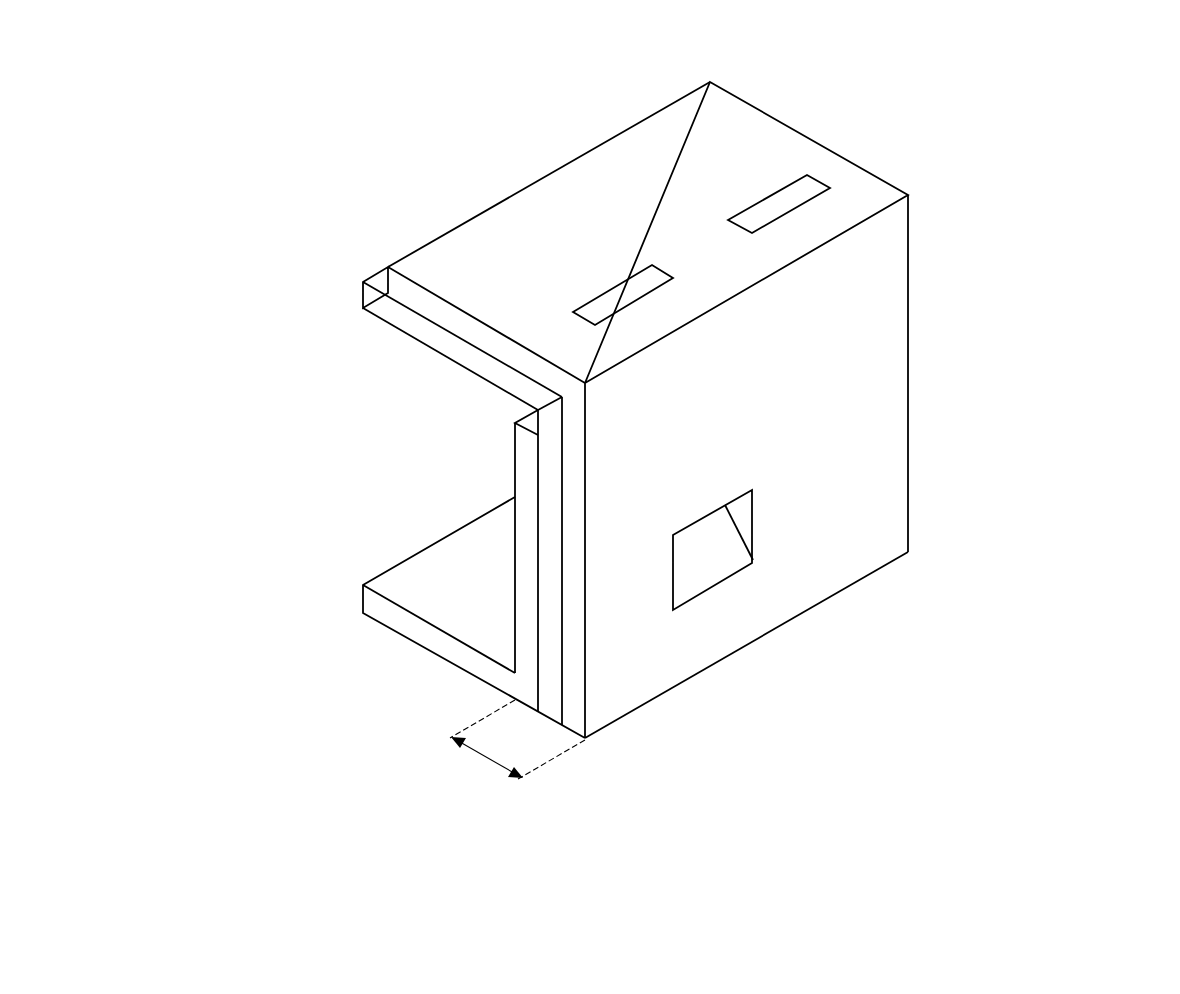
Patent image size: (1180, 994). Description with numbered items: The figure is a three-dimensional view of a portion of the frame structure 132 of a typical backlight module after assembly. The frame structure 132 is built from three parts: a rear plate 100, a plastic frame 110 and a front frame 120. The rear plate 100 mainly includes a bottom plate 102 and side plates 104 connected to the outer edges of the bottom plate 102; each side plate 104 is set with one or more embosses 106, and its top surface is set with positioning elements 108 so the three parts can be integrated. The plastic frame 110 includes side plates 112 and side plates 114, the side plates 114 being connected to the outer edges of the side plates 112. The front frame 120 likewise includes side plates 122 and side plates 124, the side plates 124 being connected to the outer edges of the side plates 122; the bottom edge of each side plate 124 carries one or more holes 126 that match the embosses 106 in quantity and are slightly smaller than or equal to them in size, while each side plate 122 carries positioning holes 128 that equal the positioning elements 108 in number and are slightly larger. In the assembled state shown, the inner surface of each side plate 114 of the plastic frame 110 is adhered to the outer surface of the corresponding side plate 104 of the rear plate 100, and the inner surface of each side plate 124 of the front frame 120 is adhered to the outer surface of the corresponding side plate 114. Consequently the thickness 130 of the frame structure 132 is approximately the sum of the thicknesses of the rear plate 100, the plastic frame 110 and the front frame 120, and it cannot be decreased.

The rear plate 100 is at (260, 647).
The bottom plate 102 is at (398, 618).
The side plate 104 is at (523, 600).
The emboss 106 is at (708, 563).
The positioning element 108 is at (768, 207).
The plastic frame 110 is at (302, 378).
The side plate 112 is at (444, 336).
The side plate 114 is at (550, 513).
The front frame 120 is at (1040, 143).
The side plate 122 is at (857, 188).
The side plate 124 is at (893, 257).
The hole 126 is at (752, 515).
The positioning hole 128 is at (813, 175).
The thickness 130 is at (516, 749).
The frame structure 132 is at (568, 112).